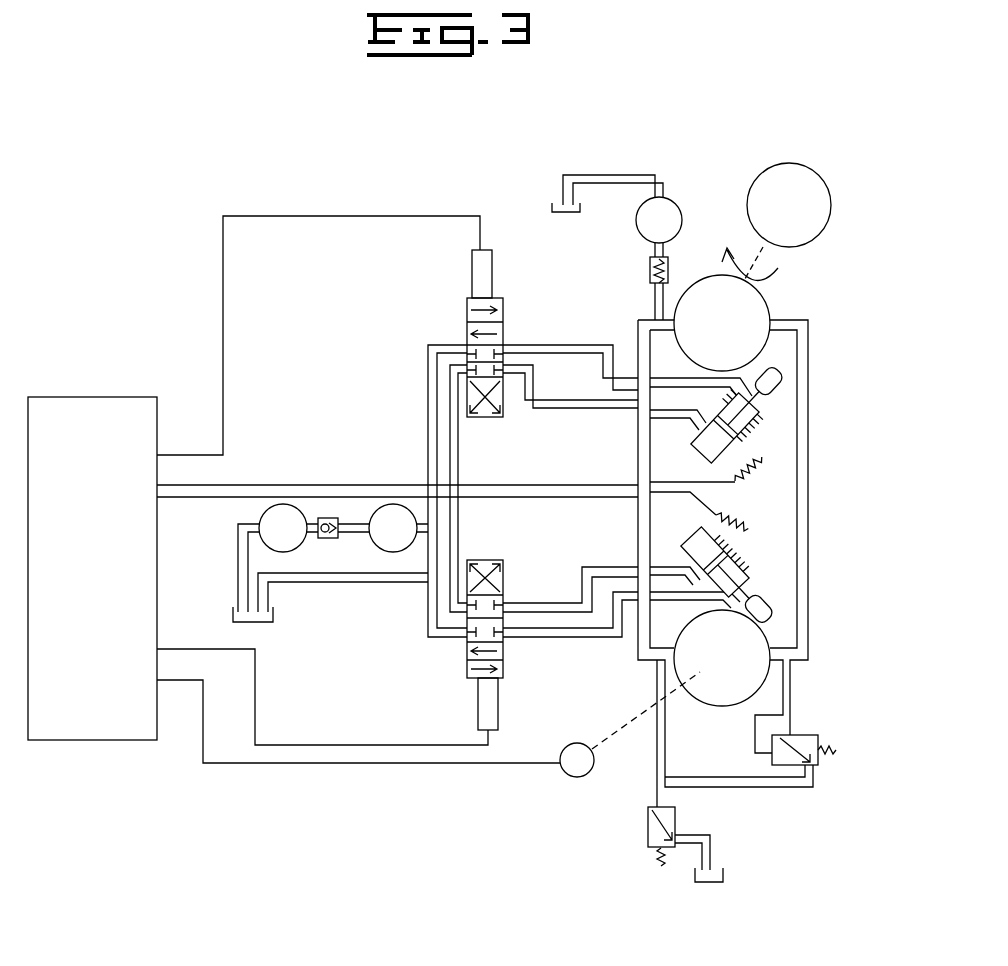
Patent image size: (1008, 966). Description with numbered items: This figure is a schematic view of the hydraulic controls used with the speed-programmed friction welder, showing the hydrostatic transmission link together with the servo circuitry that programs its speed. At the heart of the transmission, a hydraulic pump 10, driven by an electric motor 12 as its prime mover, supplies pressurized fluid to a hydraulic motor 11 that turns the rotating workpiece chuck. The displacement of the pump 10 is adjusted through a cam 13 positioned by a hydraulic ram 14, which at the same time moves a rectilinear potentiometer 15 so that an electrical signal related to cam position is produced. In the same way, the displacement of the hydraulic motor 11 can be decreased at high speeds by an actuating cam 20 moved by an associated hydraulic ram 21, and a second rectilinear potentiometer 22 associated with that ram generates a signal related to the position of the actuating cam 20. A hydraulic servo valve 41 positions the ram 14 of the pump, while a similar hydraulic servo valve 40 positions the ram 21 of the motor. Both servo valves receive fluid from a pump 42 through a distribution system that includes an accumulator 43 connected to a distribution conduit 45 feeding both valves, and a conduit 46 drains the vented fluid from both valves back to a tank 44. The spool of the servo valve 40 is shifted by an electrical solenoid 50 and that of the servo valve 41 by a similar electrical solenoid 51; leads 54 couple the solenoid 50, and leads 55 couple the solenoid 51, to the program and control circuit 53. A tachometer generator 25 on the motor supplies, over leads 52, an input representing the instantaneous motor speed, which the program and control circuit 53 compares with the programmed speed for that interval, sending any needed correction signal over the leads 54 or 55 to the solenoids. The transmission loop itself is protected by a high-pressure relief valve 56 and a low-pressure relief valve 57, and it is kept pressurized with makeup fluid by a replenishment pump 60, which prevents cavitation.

The hydraulic pump 10 is at (766, 299).
The hydraulic motor 11 is at (712, 705).
The electric motor 12 is at (813, 240).
The cam 13 is at (783, 371).
The hydraulic ram 14 is at (760, 402).
The rectilinear potentiometer 15 is at (770, 455).
The actuating cam 20 is at (765, 620).
The hydraulic ram 21 is at (740, 578).
The second rectilinear potentiometer 22 is at (752, 531).
The tachometer generator 25 is at (578, 778).
The hydraulic servo valve 40 is at (470, 560).
The hydraulic servo valve 41 is at (490, 417).
The pump 42 is at (282, 504).
The accumulator 43 is at (393, 504).
The tank 44 is at (263, 622).
The distribution conduit 45 is at (428, 398).
The conduit 46 is at (460, 510).
The electrical solenoid 50 is at (498, 688).
The electrical solenoid 51 is at (492, 264).
The leads 52 is at (268, 763).
The program and control circuit 53 is at (118, 745).
The leads 54 is at (255, 672).
The leads 55 is at (223, 355).
The high-pressure relief valve 56 is at (808, 735).
The low-pressure relief valve 57 is at (648, 826).
The replenishment pump 60 is at (673, 205).